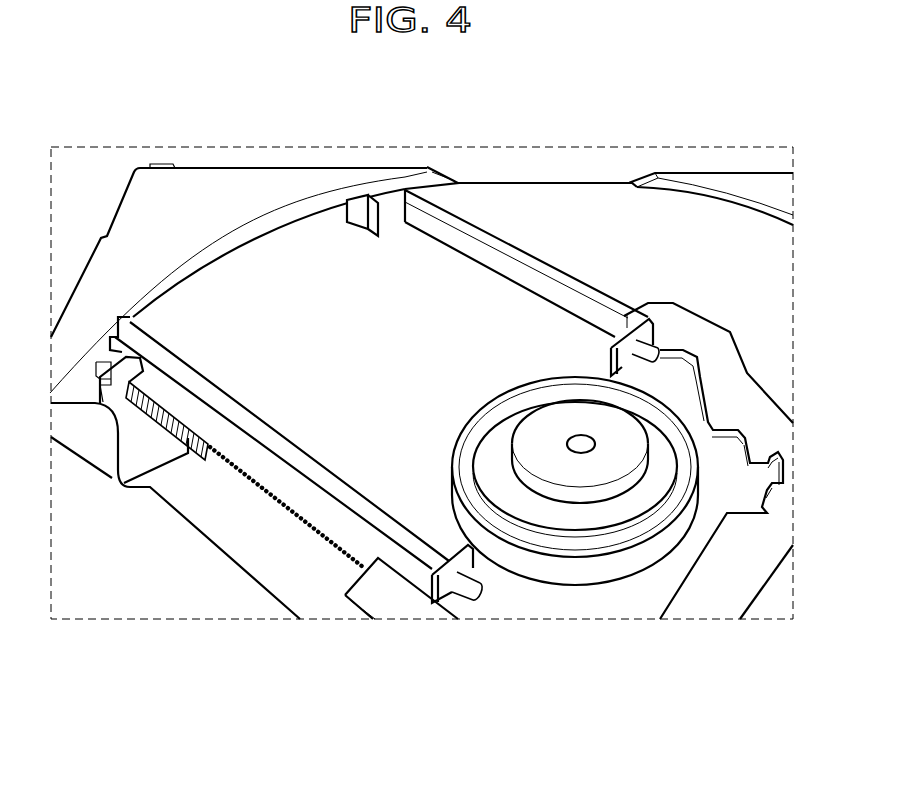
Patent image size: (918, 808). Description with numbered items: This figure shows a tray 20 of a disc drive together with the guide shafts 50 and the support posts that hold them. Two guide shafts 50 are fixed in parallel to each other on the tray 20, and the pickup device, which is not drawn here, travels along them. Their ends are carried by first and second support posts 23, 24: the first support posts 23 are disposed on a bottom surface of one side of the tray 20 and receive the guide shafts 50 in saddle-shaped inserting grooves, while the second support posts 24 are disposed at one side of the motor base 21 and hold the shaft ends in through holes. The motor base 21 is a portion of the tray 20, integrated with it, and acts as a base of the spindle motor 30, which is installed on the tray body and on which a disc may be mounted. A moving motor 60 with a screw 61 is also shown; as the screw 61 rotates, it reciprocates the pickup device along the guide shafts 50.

The tray 20 is at (258, 177).
The motor base 21 is at (742, 499).
The first support posts 23 is at (359, 222).
The second support posts 24 is at (611, 356).
The spindle motor 30 is at (493, 453).
The guide shafts 50 is at (515, 288).
The moving motor 60 is at (392, 605).
The screw 61 is at (168, 410).